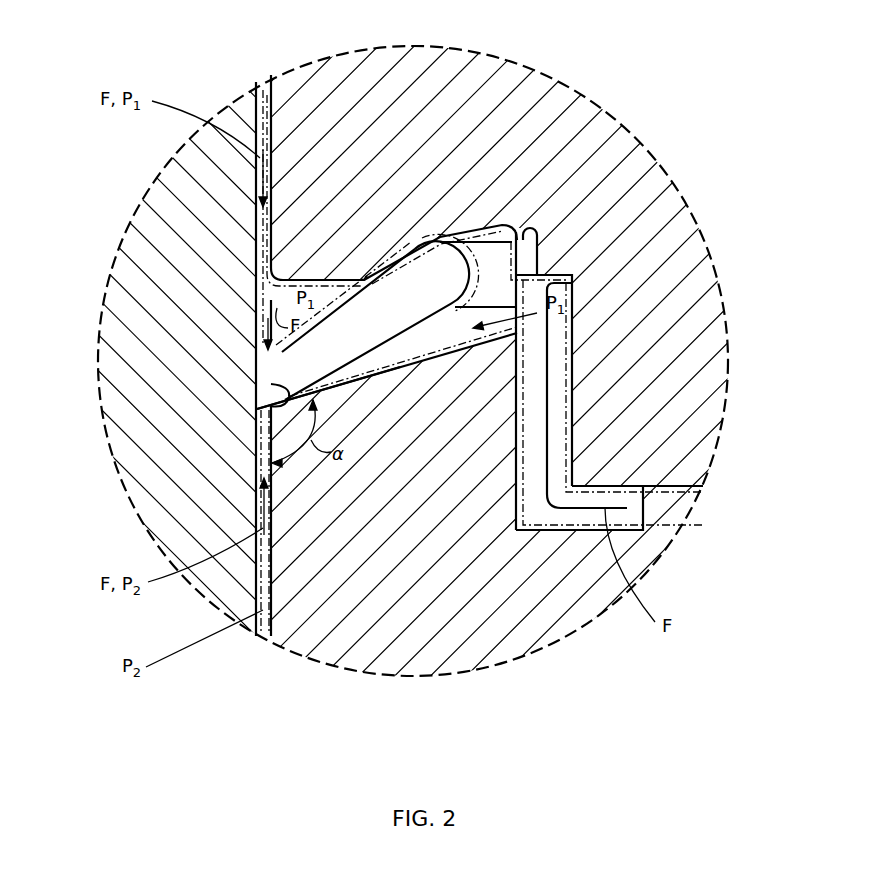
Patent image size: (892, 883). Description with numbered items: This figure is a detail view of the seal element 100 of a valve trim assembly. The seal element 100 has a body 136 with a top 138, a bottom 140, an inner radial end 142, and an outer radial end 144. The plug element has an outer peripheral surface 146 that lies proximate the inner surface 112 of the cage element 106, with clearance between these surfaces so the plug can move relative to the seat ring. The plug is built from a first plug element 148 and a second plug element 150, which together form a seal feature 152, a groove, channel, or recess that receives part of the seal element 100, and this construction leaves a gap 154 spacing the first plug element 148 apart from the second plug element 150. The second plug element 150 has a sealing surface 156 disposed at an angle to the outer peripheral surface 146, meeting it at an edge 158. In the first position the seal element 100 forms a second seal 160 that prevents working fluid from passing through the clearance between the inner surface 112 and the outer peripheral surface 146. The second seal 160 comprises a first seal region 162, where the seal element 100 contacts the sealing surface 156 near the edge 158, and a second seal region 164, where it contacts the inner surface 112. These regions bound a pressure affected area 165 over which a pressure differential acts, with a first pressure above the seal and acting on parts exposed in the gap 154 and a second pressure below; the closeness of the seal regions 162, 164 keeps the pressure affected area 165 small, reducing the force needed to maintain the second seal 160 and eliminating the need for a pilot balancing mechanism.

The seal element 100 is at (280, 298).
The cage element 106 is at (222, 92).
The inner surface 112 is at (257, 573).
The body 136 is at (458, 222).
The top 138 is at (334, 293).
The bottom 140 is at (437, 345).
The inner radial end 142 is at (485, 256).
The outer radial end 144 is at (266, 342).
The outer peripheral surface 146 is at (257, 227).
The first plug element 148 is at (283, 238).
The second plug element 150 is at (447, 652).
The seal feature 152 is at (572, 287).
The gap 154 is at (647, 507).
The sealing surface 156 is at (397, 370).
The edge 158 is at (258, 410).
The second seal 160 is at (236, 423).
The first seal region 162 is at (305, 402).
The second seal region 164 is at (255, 360).
The pressure affected area 165 is at (283, 386).